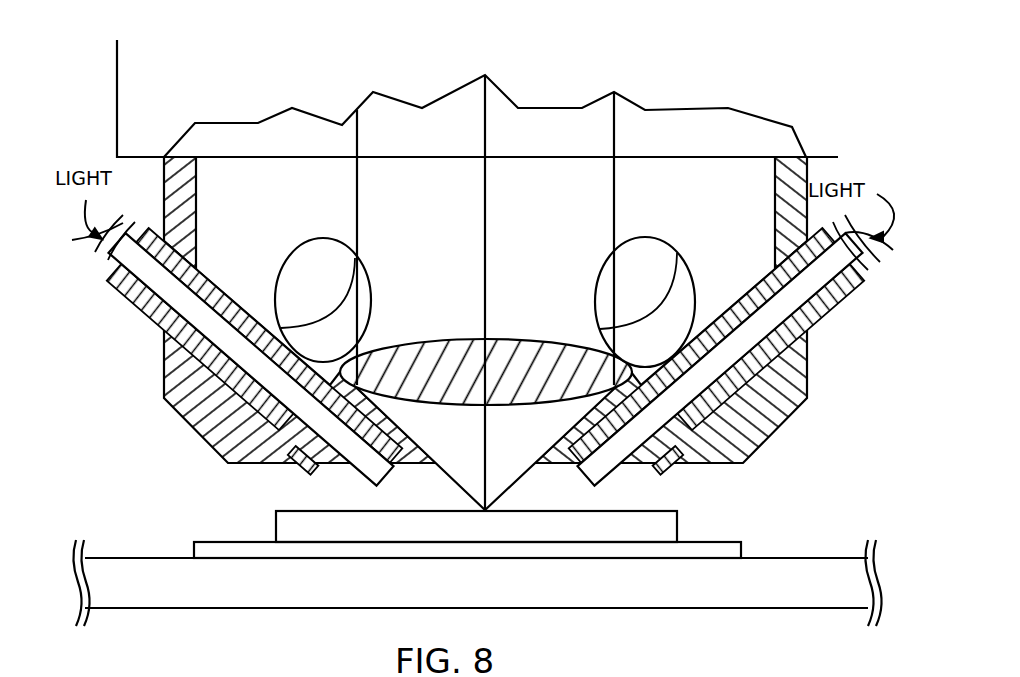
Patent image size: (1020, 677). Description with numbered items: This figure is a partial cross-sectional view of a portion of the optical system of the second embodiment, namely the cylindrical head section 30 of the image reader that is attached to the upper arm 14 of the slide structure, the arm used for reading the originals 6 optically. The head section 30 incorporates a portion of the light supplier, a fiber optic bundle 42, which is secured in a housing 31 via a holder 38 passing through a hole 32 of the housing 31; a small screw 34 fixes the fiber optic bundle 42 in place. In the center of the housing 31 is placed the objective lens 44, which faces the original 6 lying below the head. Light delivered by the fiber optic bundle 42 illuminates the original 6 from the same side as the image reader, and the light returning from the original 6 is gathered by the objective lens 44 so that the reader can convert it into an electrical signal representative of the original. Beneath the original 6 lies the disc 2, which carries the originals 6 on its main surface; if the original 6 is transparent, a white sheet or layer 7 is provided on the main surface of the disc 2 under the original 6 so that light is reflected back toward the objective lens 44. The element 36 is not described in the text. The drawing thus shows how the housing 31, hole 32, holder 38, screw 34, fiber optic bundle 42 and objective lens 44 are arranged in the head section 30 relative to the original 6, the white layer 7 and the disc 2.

The upper arm 14 is at (117, 73).
The cylindrical head section 30 is at (789, 477).
The housing 31 is at (778, 190).
The hole 32 is at (300, 246).
The small screw 34 is at (303, 468).
The conical tip 36 is at (543, 479).
The holder 38 is at (137, 307).
The fiber optic bundle 42 is at (112, 263).
The objective lens 44 is at (506, 337).
The originals 6 is at (678, 521).
The white sheet or layer 7 is at (692, 543).
The disc 2 is at (788, 559).